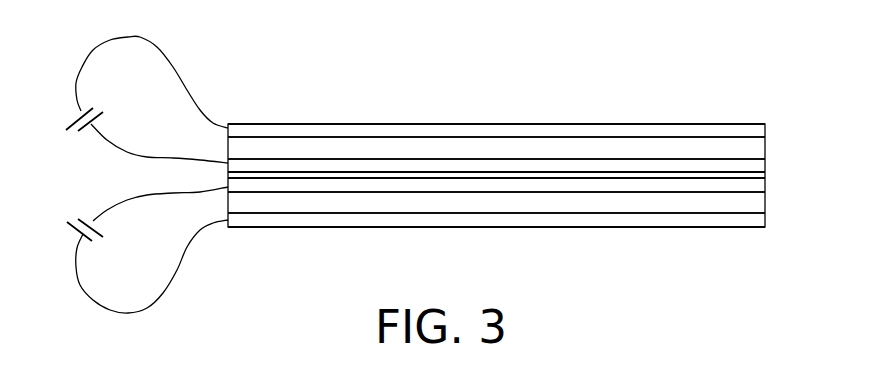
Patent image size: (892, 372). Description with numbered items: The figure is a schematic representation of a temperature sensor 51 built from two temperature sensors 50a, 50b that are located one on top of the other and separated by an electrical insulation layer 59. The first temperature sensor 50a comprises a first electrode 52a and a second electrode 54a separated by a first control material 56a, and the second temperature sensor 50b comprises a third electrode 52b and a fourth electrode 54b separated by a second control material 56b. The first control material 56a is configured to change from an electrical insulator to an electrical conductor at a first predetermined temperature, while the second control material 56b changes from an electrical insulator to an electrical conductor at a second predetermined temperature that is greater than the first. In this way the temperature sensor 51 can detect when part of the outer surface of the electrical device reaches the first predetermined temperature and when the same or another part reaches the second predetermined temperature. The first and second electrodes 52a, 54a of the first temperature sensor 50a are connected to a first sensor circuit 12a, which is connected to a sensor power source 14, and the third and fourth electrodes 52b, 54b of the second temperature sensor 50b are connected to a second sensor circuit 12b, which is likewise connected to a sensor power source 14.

The first sensor circuit 12a is at (95, 305).
The second sensor circuit 12b is at (97, 45).
The sensor power source 14 is at (74, 120).
The first temperature sensor 50a is at (773, 179).
The second temperature sensor 50b is at (773, 126).
The temperature sensor 51 is at (556, 92).
The first electrode 52a is at (280, 220).
The third electrode 52b is at (440, 165).
The second electrode 54a is at (468, 185).
The fourth electrode 54b is at (252, 132).
The first control material 56a is at (362, 203).
The second control material 56b is at (335, 147).
The electrical insulation layer 59 is at (228, 174).